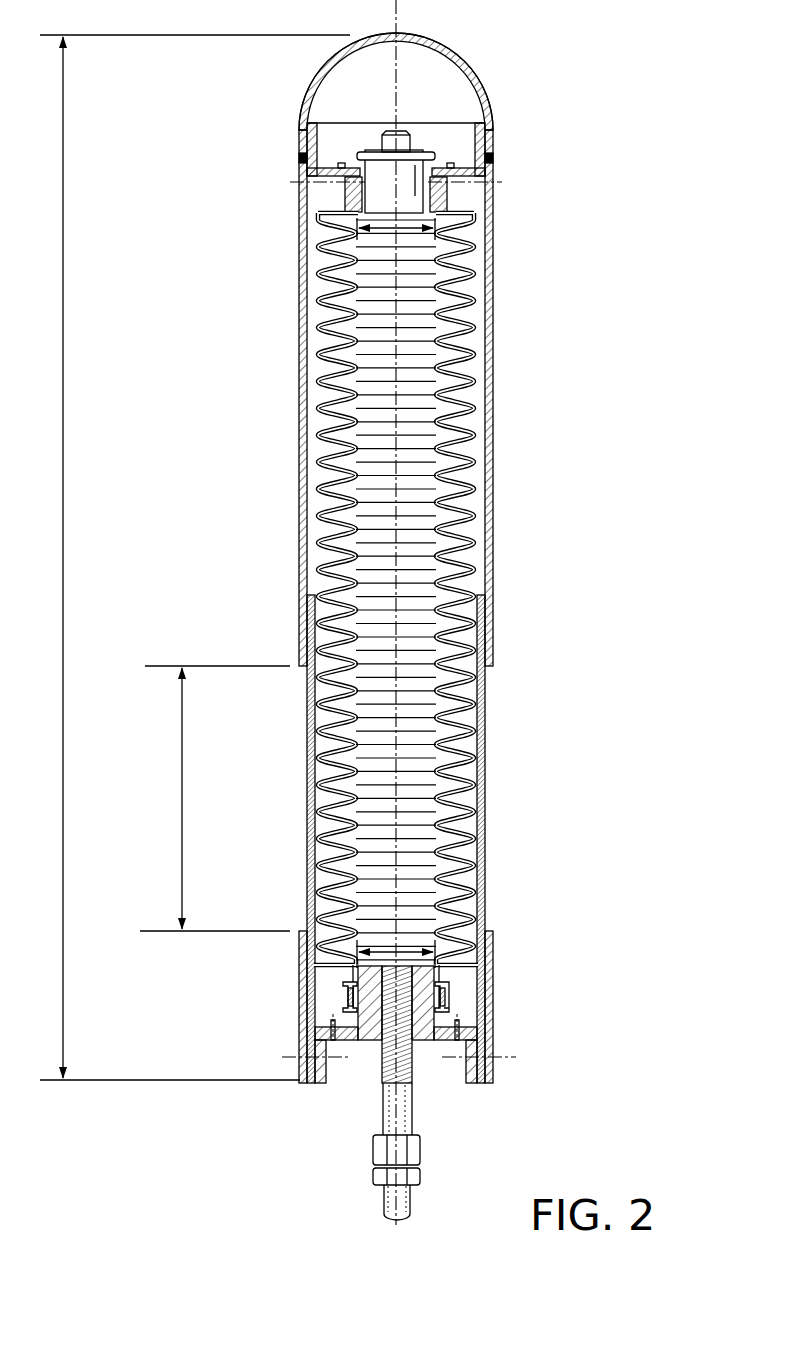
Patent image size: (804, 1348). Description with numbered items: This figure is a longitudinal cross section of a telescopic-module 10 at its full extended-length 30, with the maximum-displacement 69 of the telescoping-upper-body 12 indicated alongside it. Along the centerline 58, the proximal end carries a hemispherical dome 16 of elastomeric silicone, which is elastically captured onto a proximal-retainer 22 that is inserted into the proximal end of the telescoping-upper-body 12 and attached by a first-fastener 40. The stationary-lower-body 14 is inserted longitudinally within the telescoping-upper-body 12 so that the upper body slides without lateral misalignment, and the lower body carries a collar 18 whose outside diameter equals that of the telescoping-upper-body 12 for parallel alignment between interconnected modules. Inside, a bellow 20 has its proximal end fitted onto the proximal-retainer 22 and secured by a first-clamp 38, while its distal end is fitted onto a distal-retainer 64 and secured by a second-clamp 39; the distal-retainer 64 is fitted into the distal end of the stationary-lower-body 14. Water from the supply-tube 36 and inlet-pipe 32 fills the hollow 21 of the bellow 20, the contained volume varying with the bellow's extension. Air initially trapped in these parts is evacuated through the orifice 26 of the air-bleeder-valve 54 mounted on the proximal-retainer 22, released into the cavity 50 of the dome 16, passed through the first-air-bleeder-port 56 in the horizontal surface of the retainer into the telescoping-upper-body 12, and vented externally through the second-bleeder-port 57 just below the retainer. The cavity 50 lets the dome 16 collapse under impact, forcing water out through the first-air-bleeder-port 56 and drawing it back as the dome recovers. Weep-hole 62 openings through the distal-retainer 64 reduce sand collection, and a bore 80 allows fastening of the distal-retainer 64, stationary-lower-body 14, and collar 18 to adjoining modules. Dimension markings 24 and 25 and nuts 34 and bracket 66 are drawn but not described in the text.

The telescopic-module 10 is at (495, 302).
The telescoping-upper-body 12 is at (489, 578).
The stationary-lower-body 14 is at (486, 720).
The hemispherical dome 16 is at (306, 88).
The collar 18 is at (300, 964).
The bellow 20 is at (466, 781).
The hollow 21 is at (370, 417).
The proximal-retainer 22 is at (317, 150).
The bellows inner diameter 24 is at (406, 229).
The bellows inner diameter 25 is at (392, 958).
The orifice 26 is at (401, 136).
The extended-length 30 is at (64, 483).
The inlet-pipe 32 is at (381, 1107).
The nuts 34 is at (373, 1175).
The supply-tube 36 is at (385, 1198).
The first-clamp 38 is at (346, 197).
The second-clamp 39 is at (448, 996).
The first-fastener 40 is at (300, 158).
The cavity 50 is at (352, 66).
The air-bleeder-valve 54 is at (425, 155).
The first-air-bleeder-port 56 is at (341, 168).
The second-bleeder-port 57 is at (305, 181).
The centerline 58 is at (399, 23).
The weep-hole 62 is at (453, 1042).
The distal-retainer 64 is at (366, 1042).
The bracket 66 is at (440, 962).
The maximum-displacement 69 is at (181, 756).
The bore 80 is at (490, 1058).